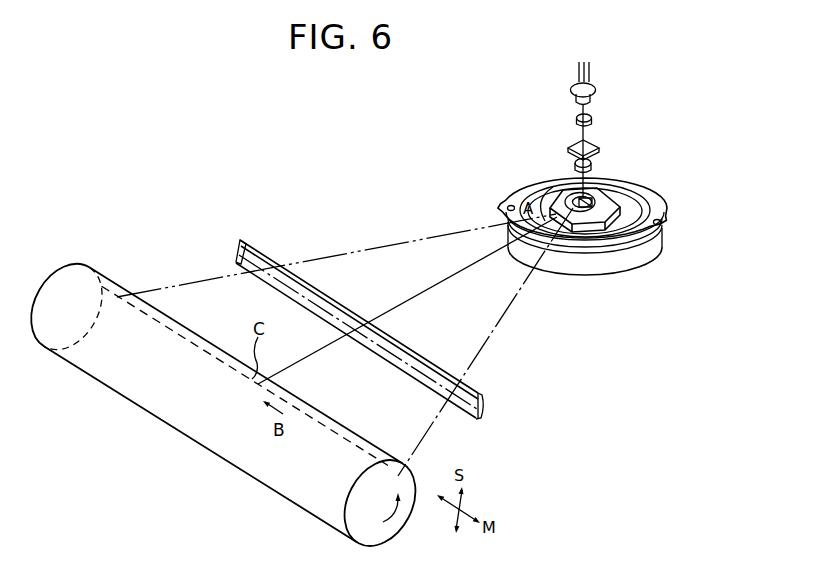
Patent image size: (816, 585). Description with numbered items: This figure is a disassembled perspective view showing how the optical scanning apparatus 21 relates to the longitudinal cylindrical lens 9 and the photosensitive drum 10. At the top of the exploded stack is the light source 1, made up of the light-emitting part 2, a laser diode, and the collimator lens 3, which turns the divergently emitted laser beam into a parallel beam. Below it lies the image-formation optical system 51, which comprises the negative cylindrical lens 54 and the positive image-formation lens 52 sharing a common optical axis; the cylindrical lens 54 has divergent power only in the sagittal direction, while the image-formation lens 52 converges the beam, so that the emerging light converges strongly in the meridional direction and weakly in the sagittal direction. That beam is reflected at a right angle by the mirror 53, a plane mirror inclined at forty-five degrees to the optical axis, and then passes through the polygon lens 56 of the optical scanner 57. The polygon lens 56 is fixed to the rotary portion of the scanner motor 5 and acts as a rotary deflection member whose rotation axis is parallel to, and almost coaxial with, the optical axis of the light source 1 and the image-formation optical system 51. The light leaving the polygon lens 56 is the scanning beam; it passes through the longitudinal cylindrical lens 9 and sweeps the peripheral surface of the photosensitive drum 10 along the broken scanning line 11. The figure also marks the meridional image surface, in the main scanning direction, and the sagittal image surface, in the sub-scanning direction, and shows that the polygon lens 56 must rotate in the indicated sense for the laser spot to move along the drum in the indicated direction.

The light source 1 is at (587, 130).
The light-emitting part 2 is at (594, 104).
The collimator lens 3 is at (591, 123).
The scanner motor 5 is at (594, 273).
The longitudinal cylindrical lens 9 is at (487, 409).
The photosensitive drum 10 is at (240, 469).
The scanning line 11 is at (300, 412).
The optical scanning apparatus 21 is at (486, 135).
The image-formation optical system 51 is at (583, 146).
The image-formation lens 52 is at (592, 169).
The mirror 53 is at (597, 199).
The cylindrical lens 54 is at (600, 148).
The polygon lens 56 is at (604, 210).
The optical scanner 57 is at (512, 184).